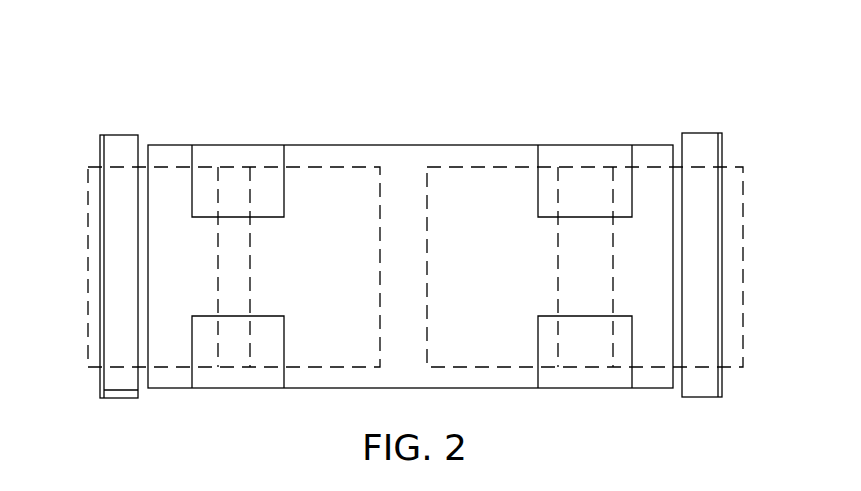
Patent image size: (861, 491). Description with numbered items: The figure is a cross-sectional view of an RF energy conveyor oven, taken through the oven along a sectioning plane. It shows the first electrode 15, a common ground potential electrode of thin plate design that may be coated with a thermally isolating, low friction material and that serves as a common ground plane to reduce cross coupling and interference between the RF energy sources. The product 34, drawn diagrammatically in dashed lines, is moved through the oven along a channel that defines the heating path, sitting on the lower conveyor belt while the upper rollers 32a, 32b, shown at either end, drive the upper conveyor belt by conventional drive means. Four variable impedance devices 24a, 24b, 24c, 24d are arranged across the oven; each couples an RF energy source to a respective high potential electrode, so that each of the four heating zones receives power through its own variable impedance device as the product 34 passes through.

The first electrode 15 is at (337, 380).
The variable impedance device 24a is at (240, 362).
The variable impedance device 24b is at (587, 363).
The variable impedance device 24c is at (237, 158).
The variable impedance device 24d is at (582, 158).
The upper roller 32a is at (118, 200).
The upper roller 32b is at (705, 152).
The product 34 is at (332, 257).